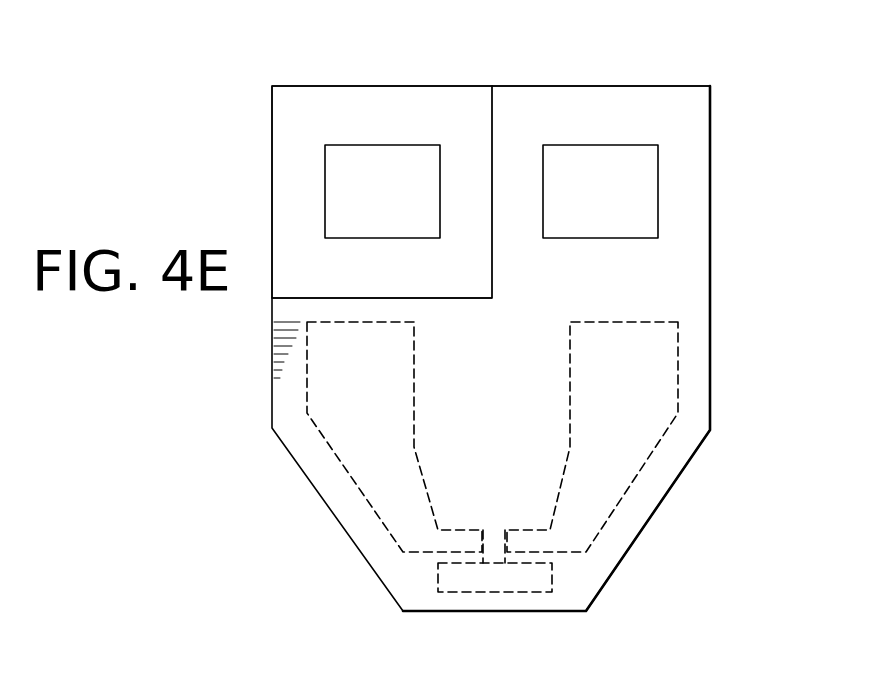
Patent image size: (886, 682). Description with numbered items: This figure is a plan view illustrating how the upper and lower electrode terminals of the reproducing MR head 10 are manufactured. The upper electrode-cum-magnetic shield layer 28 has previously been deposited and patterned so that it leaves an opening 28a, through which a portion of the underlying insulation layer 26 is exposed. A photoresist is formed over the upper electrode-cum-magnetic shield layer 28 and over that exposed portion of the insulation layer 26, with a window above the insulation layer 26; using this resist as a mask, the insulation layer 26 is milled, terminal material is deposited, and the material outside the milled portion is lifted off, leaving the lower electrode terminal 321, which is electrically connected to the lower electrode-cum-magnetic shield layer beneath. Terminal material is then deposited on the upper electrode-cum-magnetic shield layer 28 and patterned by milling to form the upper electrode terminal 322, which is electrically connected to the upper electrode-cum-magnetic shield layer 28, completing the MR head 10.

The MR head 10 is at (707, 65).
The insulation layer 26 is at (358, 98).
The upper electrode-cum-magnetic shield layer 28 is at (692, 107).
The opening 28a is at (440, 98).
The lower electrode terminal 321 is at (345, 182).
The upper electrode terminal 322 is at (643, 182).